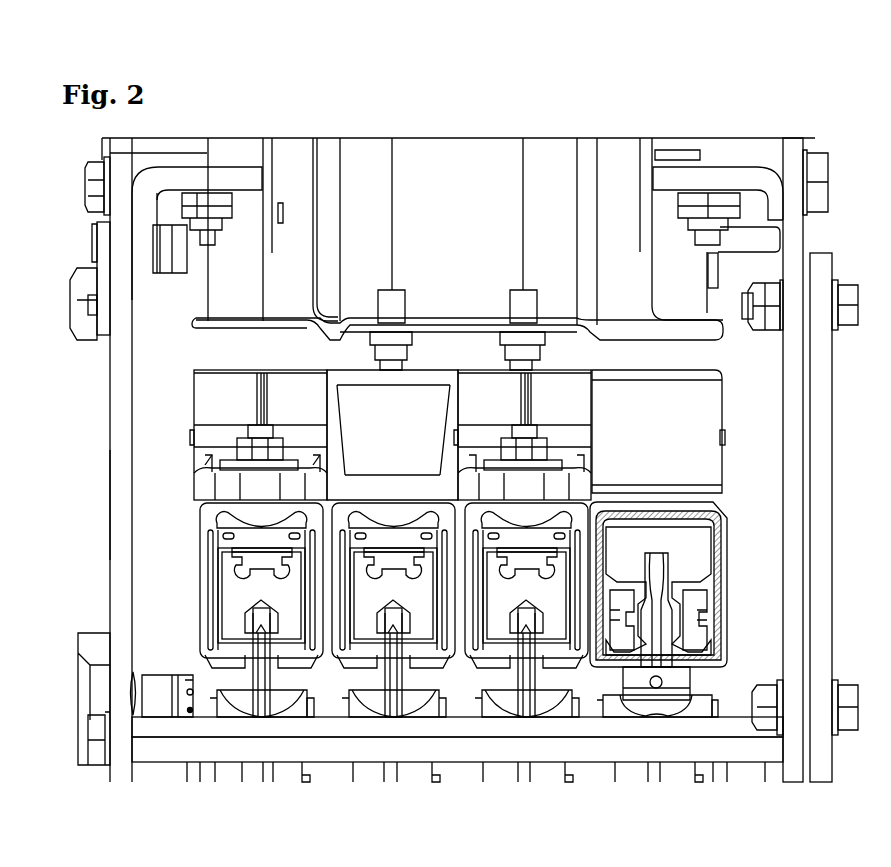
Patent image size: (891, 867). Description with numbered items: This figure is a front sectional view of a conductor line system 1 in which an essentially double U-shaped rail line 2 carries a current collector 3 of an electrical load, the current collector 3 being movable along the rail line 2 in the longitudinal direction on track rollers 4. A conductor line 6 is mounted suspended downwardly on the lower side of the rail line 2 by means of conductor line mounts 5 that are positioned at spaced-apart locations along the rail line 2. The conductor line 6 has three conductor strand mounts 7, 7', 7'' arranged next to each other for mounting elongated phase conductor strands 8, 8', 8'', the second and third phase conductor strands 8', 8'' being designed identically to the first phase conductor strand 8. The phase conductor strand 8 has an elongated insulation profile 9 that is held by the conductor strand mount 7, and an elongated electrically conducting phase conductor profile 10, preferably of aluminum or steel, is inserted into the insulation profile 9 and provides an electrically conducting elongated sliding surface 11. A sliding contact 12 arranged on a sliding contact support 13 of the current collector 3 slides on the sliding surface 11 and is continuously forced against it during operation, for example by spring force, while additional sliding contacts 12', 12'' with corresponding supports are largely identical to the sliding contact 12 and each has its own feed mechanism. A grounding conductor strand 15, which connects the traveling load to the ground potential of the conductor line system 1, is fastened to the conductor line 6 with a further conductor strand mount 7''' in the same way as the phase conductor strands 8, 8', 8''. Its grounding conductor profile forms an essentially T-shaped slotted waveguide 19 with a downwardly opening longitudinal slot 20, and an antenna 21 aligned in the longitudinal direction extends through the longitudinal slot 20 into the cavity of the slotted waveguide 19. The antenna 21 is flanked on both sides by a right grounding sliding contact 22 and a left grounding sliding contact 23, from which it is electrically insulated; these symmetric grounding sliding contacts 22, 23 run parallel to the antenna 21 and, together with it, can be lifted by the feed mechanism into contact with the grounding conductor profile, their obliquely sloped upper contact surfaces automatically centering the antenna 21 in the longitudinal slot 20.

The conductor line system 1 is at (815, 120).
The rail line 2 is at (318, 138).
The current collector 3 is at (110, 518).
The track rollers 4 is at (256, 138).
The conductor line mounts 5 is at (196, 462).
The conductor line 6 is at (202, 362).
The conductor strand mount 7 is at (239, 578).
The conductor strand mount 7' is at (393, 556).
The conductor strand mount 7'' is at (546, 553).
The conductor strand mount 7''' is at (685, 582).
The phase conductor strand 8 is at (231, 526).
The phase conductor strand 8' is at (395, 466).
The phase conductor strand 8'' is at (533, 466).
The insulation profile 9 is at (218, 558).
The phase conductor profile 10 is at (232, 578).
The sliding surface 11 is at (250, 606).
The sliding contact 12 is at (211, 662).
The sliding contact 12' is at (362, 662).
The sliding contact 12'' is at (487, 662).
The sliding contact support 13 is at (245, 690).
The grounding conductor strand 15 is at (700, 515).
The slotted waveguide 19 is at (688, 550).
The longitudinal slot 20 is at (640, 583).
The antenna 21 is at (665, 575).
The right grounding sliding contact 22 is at (690, 687).
The left grounding sliding contact 23 is at (622, 687).